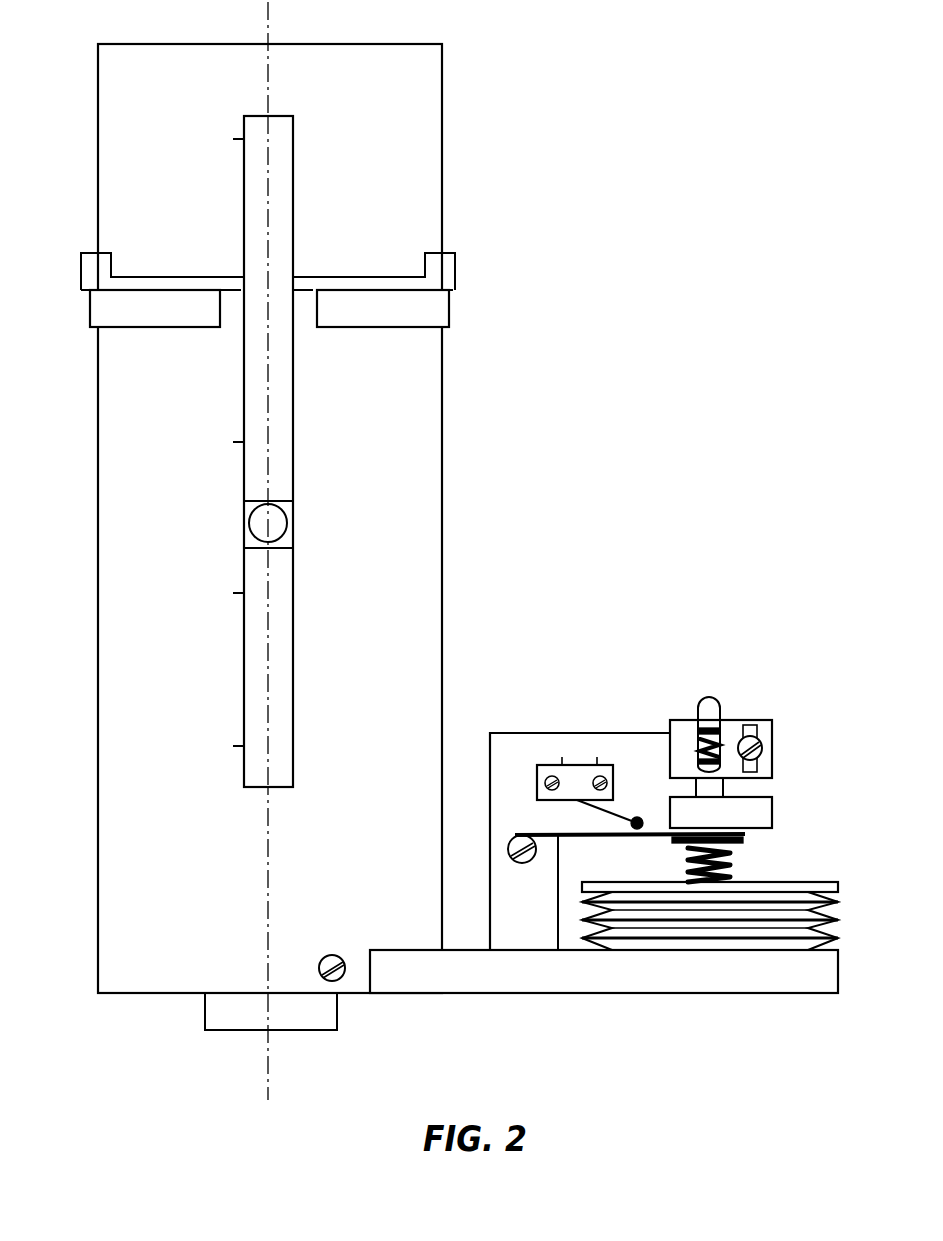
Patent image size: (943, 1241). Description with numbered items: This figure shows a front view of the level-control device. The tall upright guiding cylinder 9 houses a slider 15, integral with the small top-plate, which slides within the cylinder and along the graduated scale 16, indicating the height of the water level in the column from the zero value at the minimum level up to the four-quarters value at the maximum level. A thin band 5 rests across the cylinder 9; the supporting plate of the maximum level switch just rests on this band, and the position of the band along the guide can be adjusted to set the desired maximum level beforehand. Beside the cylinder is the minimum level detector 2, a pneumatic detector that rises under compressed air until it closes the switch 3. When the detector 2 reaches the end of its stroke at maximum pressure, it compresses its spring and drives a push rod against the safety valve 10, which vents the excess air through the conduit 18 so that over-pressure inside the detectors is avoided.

The minimum level detector 2 is at (773, 882).
The switch 3 is at (580, 775).
The thin band 5 is at (441, 312).
The guiding cylinder 9 is at (98, 688).
The safety valve 10 is at (725, 743).
The slider 15 is at (277, 523).
The graduated scale 16 is at (260, 692).
The conduit 18 is at (710, 697).